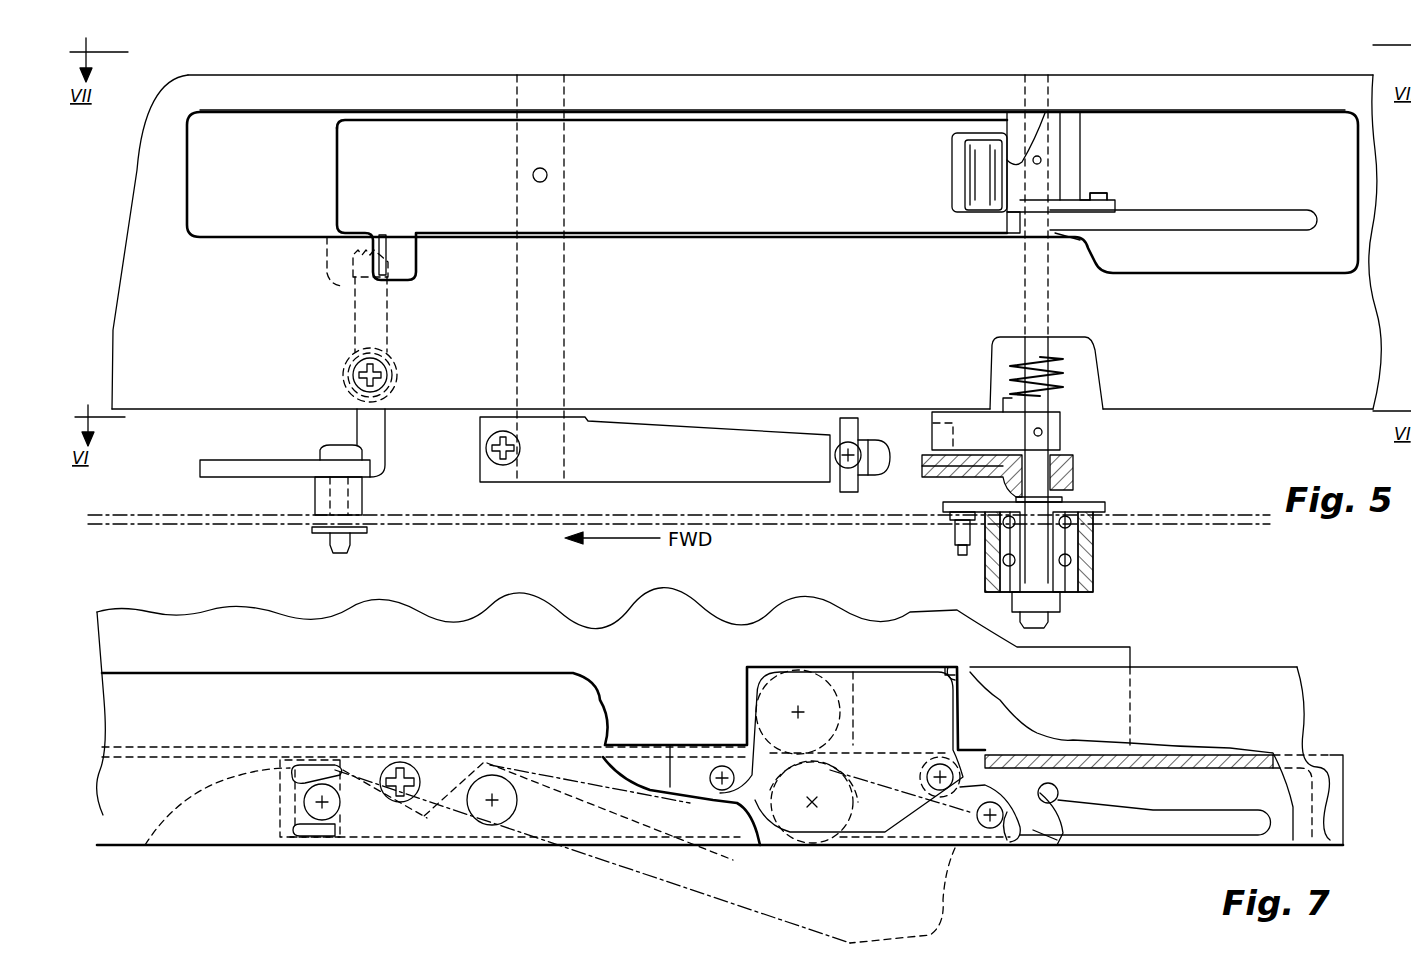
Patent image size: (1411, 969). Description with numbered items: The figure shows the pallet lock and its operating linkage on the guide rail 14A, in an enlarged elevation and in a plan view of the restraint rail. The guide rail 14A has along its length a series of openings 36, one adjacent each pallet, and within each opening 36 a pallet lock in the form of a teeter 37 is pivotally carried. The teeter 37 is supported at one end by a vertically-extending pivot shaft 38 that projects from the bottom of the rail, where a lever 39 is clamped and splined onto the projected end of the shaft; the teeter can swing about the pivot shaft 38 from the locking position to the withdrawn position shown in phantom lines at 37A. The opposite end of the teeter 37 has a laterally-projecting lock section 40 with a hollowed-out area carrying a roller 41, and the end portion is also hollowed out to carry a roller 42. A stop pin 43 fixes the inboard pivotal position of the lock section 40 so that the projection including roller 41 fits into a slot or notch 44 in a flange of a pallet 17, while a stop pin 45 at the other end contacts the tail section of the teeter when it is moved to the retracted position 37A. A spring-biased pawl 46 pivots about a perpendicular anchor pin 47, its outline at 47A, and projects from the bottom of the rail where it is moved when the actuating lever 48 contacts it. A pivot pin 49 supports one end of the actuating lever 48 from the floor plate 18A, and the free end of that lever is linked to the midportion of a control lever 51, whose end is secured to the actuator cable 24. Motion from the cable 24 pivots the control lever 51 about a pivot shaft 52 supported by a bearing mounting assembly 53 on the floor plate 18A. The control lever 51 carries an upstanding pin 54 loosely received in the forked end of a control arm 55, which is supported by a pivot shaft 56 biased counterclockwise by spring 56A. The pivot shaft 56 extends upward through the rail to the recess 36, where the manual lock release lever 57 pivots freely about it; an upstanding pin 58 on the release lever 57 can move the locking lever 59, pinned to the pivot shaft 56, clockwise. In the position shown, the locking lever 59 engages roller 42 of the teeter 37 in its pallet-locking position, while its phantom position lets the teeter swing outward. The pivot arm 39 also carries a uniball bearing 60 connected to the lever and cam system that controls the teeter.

In FIG. 5, the guide rail 14A is at (1188, 85).
In FIG. 7, the pallet 17 is at (265, 628).
In FIG. 7, the floor plate 18A is at (97, 815).
In FIG. 5, the actuator cable 24 is at (1157, 512).
In FIG. 5, the opening 36 is at (873, 118).
In FIG. 7, the opening 36 is at (290, 800).
In FIG. 5, the teeter 37 is at (736, 180).
In FIG. 7, the teeter 37 is at (670, 745).
In FIG. 7, the withdrawn position of teeter 37A is at (625, 880).
In FIG. 5, the pivot shaft 38 is at (565, 195).
In FIG. 7, the pivot shaft 38 is at (483, 818).
In FIG. 5, the lever 39 is at (640, 468).
In FIG. 7, the lock section 40 is at (863, 680).
In FIG. 7, the roller 41 is at (762, 680).
In FIG. 5, the roller 42 is at (955, 160).
In FIG. 7, the roller 42 is at (960, 745).
In FIG. 7, the stop pin 43 is at (722, 766).
In FIG. 7, the slot or notch 44 is at (950, 672).
In FIG. 7, the stop pin 45 is at (395, 765).
In FIG. 5, the pawl 46 is at (388, 303).
In FIG. 7, the pawl 46 is at (308, 800).
In FIG. 5, the anchor pin 47 is at (385, 372).
In FIG. 5, the screw head outline 47A is at (345, 358).
In FIG. 5, the actuating lever 48 is at (236, 462).
In FIG. 5, the pivot pin 49 is at (335, 445).
In FIG. 5, the control lever 51 is at (925, 470).
In FIG. 5, the pivot shaft 52 is at (1060, 495).
In FIG. 5, the bearing mounting assembly 53 is at (1095, 548).
In FIG. 5, the upstanding pin 54 is at (925, 440).
In FIG. 5, the control arm 55 is at (1062, 430).
In FIG. 5, the pivot shaft 56 is at (1045, 350).
In FIG. 7, the pivot shaft 56 is at (990, 830).
In FIG. 5, the spring 56A is at (1060, 378).
In FIG. 5, the manual lock release lever 57 is at (1197, 215).
In FIG. 7, the manual lock release lever 57 is at (1145, 830).
In FIG. 5, the upstanding pin 58 is at (1100, 193).
In FIG. 7, the upstanding pin 58 is at (1060, 795).
In FIG. 5, the locking lever 59 is at (1050, 150).
In FIG. 7, the locking lever 59 is at (1033, 830).
In FIG. 5, the uniball bearing 60 is at (838, 455).